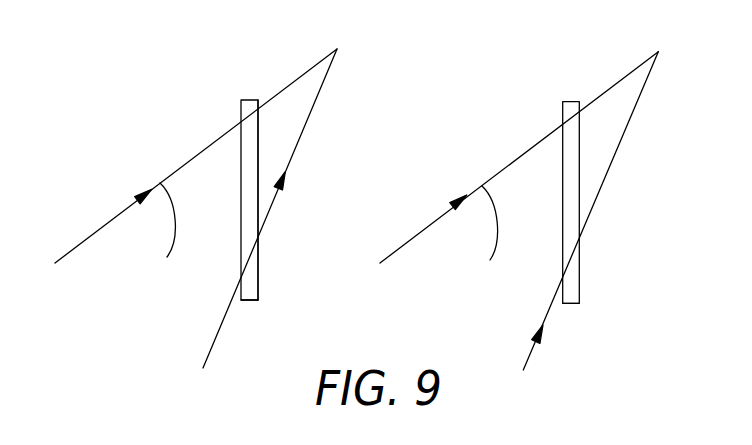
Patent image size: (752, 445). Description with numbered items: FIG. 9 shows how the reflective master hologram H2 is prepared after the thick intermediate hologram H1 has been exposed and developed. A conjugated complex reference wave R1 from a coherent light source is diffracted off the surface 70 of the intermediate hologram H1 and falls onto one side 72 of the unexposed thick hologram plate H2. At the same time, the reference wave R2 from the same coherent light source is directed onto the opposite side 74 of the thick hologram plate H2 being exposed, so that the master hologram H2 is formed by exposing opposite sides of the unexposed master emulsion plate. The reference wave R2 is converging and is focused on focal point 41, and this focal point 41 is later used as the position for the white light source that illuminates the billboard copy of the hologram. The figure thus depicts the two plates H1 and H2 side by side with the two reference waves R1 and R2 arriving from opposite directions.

The focal point 41 is at (338, 49).
The opposite side of thick hologram plate H2 74 is at (240, 115).
The one side of thick hologram plate H2 72 is at (258, 277).
The surface of intermediate hologram H1 70 is at (562, 113).
The master hologram H2 is at (248, 301).
The reference wave R2 is at (230, 303).
The intermediate hologram H1 is at (570, 304).
The conjugated complex reference wave R1 is at (550, 307).